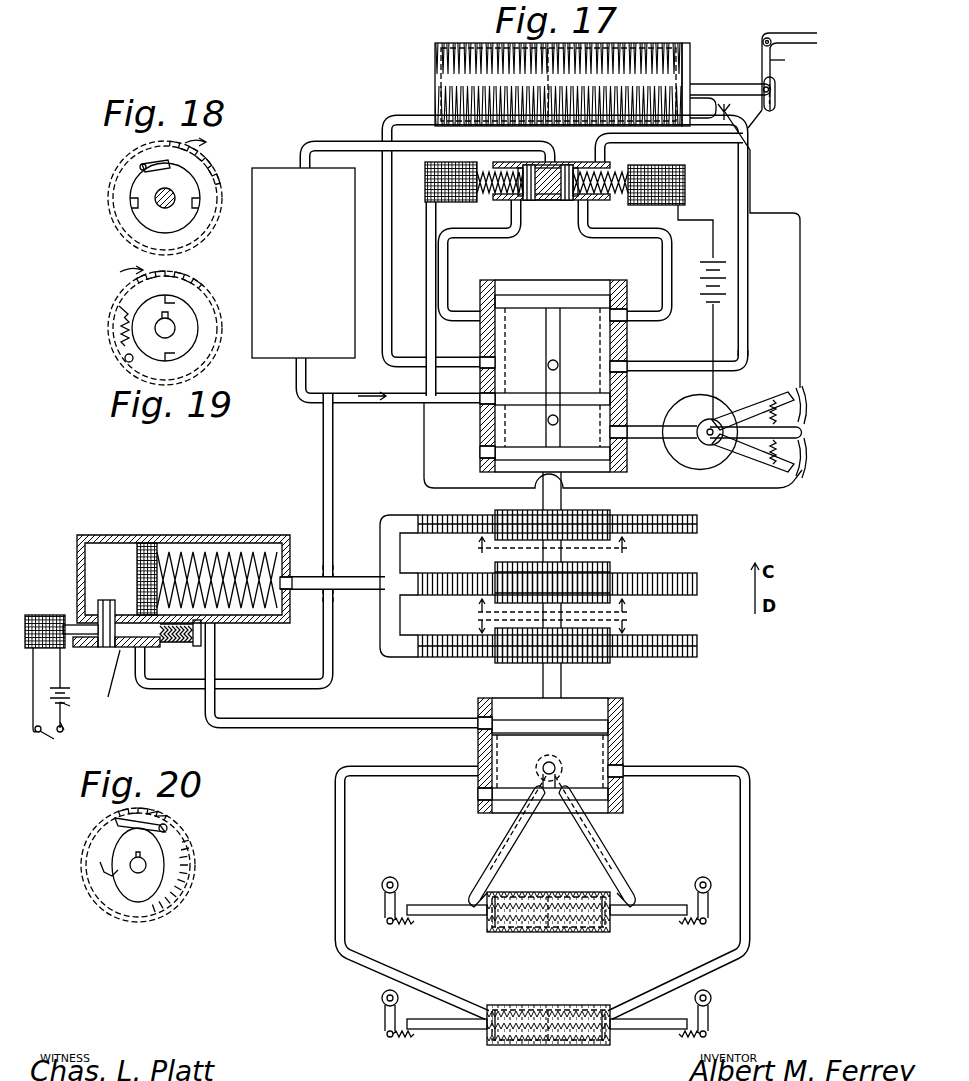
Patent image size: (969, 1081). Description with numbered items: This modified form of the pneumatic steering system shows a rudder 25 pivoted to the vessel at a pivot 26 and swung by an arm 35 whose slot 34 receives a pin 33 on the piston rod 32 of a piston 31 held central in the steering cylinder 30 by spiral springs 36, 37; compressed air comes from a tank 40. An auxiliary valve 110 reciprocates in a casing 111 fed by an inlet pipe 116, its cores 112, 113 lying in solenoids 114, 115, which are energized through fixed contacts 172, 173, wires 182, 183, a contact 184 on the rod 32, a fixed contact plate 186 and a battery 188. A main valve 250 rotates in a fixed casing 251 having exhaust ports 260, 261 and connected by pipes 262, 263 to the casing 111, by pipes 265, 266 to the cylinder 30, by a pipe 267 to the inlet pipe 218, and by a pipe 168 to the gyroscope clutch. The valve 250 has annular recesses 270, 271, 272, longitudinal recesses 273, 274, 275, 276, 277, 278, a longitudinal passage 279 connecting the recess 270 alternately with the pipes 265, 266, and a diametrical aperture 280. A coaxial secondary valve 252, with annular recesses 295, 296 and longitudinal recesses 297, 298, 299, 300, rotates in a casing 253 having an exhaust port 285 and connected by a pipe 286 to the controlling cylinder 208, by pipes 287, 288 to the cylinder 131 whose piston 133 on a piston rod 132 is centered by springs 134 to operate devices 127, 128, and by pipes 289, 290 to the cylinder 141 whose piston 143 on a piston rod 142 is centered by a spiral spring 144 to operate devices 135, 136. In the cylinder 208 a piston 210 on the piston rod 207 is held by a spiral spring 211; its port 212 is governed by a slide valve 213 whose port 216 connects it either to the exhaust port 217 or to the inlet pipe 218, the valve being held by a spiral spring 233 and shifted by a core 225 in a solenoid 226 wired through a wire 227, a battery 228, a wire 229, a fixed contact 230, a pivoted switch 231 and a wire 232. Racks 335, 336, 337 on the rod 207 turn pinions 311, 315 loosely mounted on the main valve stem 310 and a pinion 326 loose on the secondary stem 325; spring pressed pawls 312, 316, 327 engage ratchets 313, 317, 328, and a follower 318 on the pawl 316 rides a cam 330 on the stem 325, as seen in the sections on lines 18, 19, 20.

In FIG. 17, the rudder 25 is at (795, 26).
In FIG. 17, the pivot 26 is at (763, 38).
In FIG. 17, the steering cylinder 30 is at (558, 74).
In FIG. 17, the piston 31 is at (546, 62).
In FIG. 17, the piston rod 32 is at (728, 78).
In FIG. 17, the pin 33 is at (775, 92).
In FIG. 17, the slot 34 is at (773, 112).
In FIG. 17, the arm 35 is at (790, 60).
In FIG. 17, the spiral spring 36 is at (478, 60).
In FIG. 17, the spiral spring 37 is at (688, 48).
In FIG. 17, the tank 40 is at (303, 263).
In FIG. 17, the auxiliary valve 110 is at (551, 181).
In FIG. 17, the auxiliary valve casing 111 is at (583, 163).
In FIG. 17, the core 112 is at (519, 190).
In FIG. 17, the core 113 is at (600, 170).
In FIG. 17, the solenoid 114 is at (425, 170).
In FIG. 17, the solenoid 115 is at (690, 180).
In FIG. 17, the inlet pipe 116 is at (322, 148).
In FIG. 17, the operative device 127 is at (410, 873).
In FIG. 17, the operative device 128 is at (696, 896).
In FIG. 17, the cylinder 131 is at (549, 892).
In FIG. 17, the piston rod 132 is at (448, 916).
In FIG. 17, the piston 133 is at (549, 932).
In FIG. 17, the springs 134 is at (512, 930).
In FIG. 17, the device 135 is at (382, 1016).
In FIG. 17, the device 136 is at (711, 1014).
In FIG. 17, the cylinder 141 is at (548, 1005).
In FIG. 17, the piston rod 142 is at (448, 1019).
In FIG. 17, the piston 143 is at (548, 1046).
In FIG. 17, the spiral spring 144 is at (495, 1046).
In FIG. 17, the pipe 168 is at (672, 441).
In FIG. 17, the fixed contact 172 is at (792, 392).
In FIG. 17, the fixed contact 173 is at (800, 480).
In FIG. 17, the wire 182 is at (690, 141).
In FIG. 17, the wire 183 is at (628, 146).
In FIG. 17, the contact 184 is at (735, 115).
In FIG. 17, the fixed contact plate 186 is at (752, 165).
In FIG. 17, the battery 188 is at (706, 290).
In FIG. 17, the piston rod 207 is at (345, 580).
In FIG. 17, the cylinder 208 is at (184, 563).
In FIG. 17, the piston 210 is at (147, 543).
In FIG. 17, the spiral spring 211 is at (214, 552).
In FIG. 17, the port 212 is at (112, 614).
In FIG. 17, the slide valve 213 is at (96, 648).
In FIG. 17, the port 216 is at (165, 644).
In FIG. 17, the exhaust port 217 is at (116, 685).
In FIG. 17, the inlet pipe 218 is at (333, 482).
In FIG. 17, the core 225 is at (70, 624).
In FIG. 17, the solenoid 226 is at (38, 615).
In FIG. 17, the wire 227 is at (44, 668).
In FIG. 17, the battery 228 is at (68, 705).
In FIG. 17, the wire 229 is at (66, 726).
In FIG. 17, the fixed contact 230 is at (64, 734).
In FIG. 17, the pivoted switch 231 is at (47, 745).
In FIG. 17, the wire 232 is at (50, 715).
In FIG. 17, the spiral spring 233 is at (203, 652).
In FIG. 17, the main valve 250 is at (552, 363).
In FIG. 17, the main valve casing 251 is at (618, 282).
In FIG. 17, the secondary valve 252 is at (553, 743).
In FIG. 17, the secondary valve casing 253 is at (623, 722).
In FIG. 17, the exhaust port 260 is at (627, 310).
In FIG. 17, the exhaust port 261 is at (480, 453).
In FIG. 17, the pipe 262 is at (447, 262).
In FIG. 17, the pipe 263 is at (670, 252).
In FIG. 17, the pipe 265 is at (389, 228).
In FIG. 17, the pipe 266 is at (749, 199).
In FIG. 17, the pipe 267 is at (400, 405).
In FIG. 17, the annular recess 270 is at (525, 297).
In FIG. 17, the annular recess 271 is at (530, 395).
In FIG. 17, the annular recess 272 is at (580, 452).
In FIG. 17, the longitudinal recess 273 is at (508, 342).
In FIG. 17, the longitudinal recess 274 is at (600, 340).
In FIG. 17, the longitudinal recess 275 is at (520, 420).
In FIG. 17, the longitudinal recess 276 is at (605, 428).
In FIG. 17, the longitudinal recess 277 is at (560, 383).
In FIG. 17, the longitudinal recess 278 is at (548, 422).
In FIG. 17, the longitudinal passage 279 is at (548, 360).
In FIG. 17, the transverse diametrical port 280 is at (543, 468).
In FIG. 17, the exhaust port 285 is at (478, 795).
In FIG. 17, the pipe 286 is at (428, 723).
In FIG. 17, the pipe 287 is at (500, 836).
In FIG. 17, the pipe 288 is at (600, 850).
In FIG. 17, the pipe 289 is at (340, 840).
In FIG. 17, the pipe 290 is at (745, 848).
In FIG. 17, the annular recess 295 is at (516, 718).
In FIG. 17, the annular recess 296 is at (530, 816).
In FIG. 17, the longitudinal recess 297 is at (510, 750).
In FIG. 17, the longitudinal recess 298 is at (630, 760).
In FIG. 17, the longitudinal recess 299 is at (562, 766).
In FIG. 17, the longitudinal recess 300 is at (551, 761).
In FIG. 17, the valve stem 310 is at (543, 497).
In FIG. 18, the valve stem 310 is at (175, 193).
In FIG. 19, the valve stem 310 is at (175, 325).
In FIG. 17, the pinion 311 is at (612, 512).
In FIG. 18, the pinion 311 is at (206, 160).
In FIG. 18, the spring pressed pawl 312 is at (143, 163).
In FIG. 18, the ratchet 313 is at (130, 195).
In FIG. 17, the pinion 315 is at (612, 578).
In FIG. 19, the pinion 315 is at (192, 280).
In FIG. 19, the spring pressed pawl 316 is at (127, 360).
In FIG. 19, the ratchet 317 is at (148, 315).
In FIG. 19, the follower 318 is at (122, 338).
In FIG. 17, the stem 325 is at (563, 678).
In FIG. 20, the stem 325 is at (146, 868).
In FIG. 17, the pinion 326 is at (612, 638).
In FIG. 20, the pinion 326 is at (193, 850).
In FIG. 20, the spring pressed pawl 327 is at (168, 826).
In FIG. 20, the ratchet 328 is at (104, 870).
In FIG. 20, the cam 330 is at (130, 850).
In FIG. 17, the rack 335 is at (680, 520).
In FIG. 17, the rack 336 is at (685, 580).
In FIG. 17, the rack 337 is at (692, 644).
In FIG. 17, the section line 18 is at (542, 547).
In FIG. 17, the section line 19 is at (544, 605).
In FIG. 17, the section line 20 is at (544, 622).